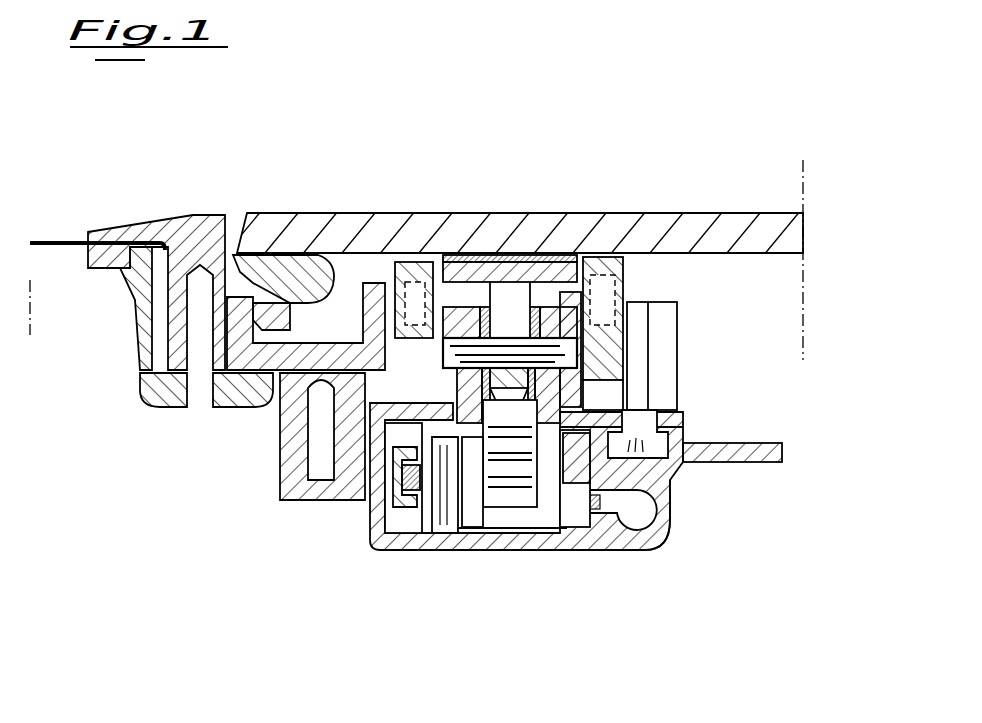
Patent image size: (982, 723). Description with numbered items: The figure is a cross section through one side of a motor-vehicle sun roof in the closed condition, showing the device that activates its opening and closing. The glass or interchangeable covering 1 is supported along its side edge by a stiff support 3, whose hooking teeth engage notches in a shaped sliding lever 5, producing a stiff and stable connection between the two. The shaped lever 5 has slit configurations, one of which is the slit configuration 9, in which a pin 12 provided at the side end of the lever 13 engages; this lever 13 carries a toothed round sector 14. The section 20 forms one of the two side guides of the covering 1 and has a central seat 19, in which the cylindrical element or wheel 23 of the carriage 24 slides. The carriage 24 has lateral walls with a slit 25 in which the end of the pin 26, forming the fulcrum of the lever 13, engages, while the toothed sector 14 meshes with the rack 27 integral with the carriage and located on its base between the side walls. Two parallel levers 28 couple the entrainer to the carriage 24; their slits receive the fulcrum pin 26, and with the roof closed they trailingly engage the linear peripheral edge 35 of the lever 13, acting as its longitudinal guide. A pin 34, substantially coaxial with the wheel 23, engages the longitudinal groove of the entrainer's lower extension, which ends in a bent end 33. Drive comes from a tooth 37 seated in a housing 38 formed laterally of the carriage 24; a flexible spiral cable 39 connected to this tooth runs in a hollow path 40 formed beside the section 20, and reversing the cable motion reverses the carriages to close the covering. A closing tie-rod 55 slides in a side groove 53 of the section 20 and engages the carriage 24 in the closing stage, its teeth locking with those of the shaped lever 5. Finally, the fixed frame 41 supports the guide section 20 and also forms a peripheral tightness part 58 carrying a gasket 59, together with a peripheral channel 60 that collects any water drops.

The covering 1 is at (312, 213).
The stiff support 3 is at (478, 262).
The shaped sliding lever 5 is at (400, 268).
The slit configuration 9 is at (395, 282).
The pin 12 is at (455, 270).
The lever 13 is at (508, 257).
The toothed round sector 14 is at (335, 444).
The central seat 19 is at (531, 535).
The section 20 is at (757, 465).
The cylindrical element or wheel 23 is at (522, 455).
The carriage 24 is at (490, 517).
The slit 25 is at (468, 268).
The pin 26 is at (447, 358).
The rack 27 is at (513, 500).
The parallel lever 28 is at (573, 385).
The bent end 33 is at (373, 522).
The pin 34 is at (407, 537).
The linear section peripheral edge 35 is at (580, 410).
The tooth 37 is at (603, 550).
The housing 38 is at (593, 553).
The flexible spiral cable 39 is at (662, 520).
The hollow path 40 is at (650, 543).
The fixed frame 41 is at (180, 213).
The side groove 53 is at (672, 465).
The closing tie-rod 55 is at (638, 420).
The peripheral tightness part 58 is at (335, 328).
The gasket 59 is at (240, 213).
The peripheral channel 60 is at (300, 347).